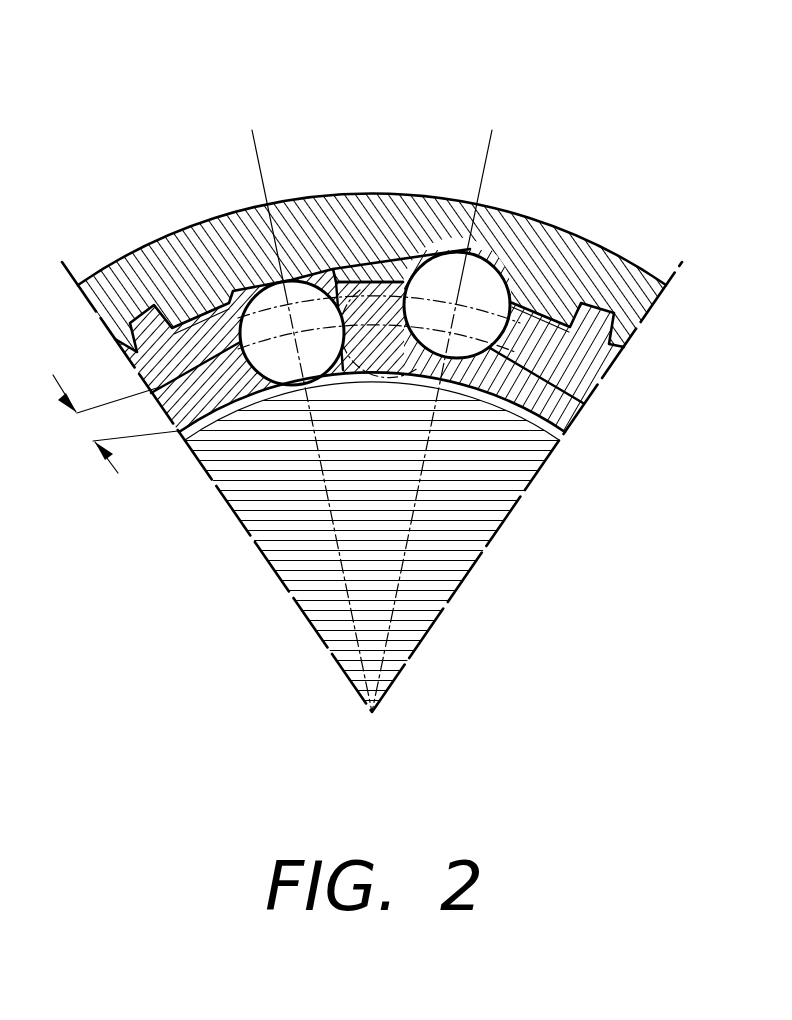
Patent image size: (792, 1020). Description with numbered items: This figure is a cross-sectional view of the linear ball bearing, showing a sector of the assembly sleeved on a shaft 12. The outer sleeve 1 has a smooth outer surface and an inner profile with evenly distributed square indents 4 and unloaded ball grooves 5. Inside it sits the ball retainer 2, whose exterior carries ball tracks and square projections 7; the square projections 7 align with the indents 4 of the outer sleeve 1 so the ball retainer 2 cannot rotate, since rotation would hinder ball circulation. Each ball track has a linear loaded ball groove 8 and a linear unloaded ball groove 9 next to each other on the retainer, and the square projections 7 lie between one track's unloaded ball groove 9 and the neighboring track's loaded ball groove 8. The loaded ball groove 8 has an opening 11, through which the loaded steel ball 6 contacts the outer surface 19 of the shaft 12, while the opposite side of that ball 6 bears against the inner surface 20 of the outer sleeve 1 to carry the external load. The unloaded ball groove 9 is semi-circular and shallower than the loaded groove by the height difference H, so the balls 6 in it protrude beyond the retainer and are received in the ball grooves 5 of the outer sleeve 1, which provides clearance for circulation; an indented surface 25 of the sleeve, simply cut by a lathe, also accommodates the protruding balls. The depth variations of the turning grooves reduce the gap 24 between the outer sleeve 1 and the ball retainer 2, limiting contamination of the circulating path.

The outer sleeve 1 is at (643, 310).
The ball retainer 2 is at (268, 146).
The square indents 4 is at (597, 300).
The unloaded ball grooves 5 is at (493, 248).
The steel balls 6 is at (503, 265).
The square projections 7 is at (620, 302).
The loaded ball groove 8 is at (242, 402).
The unloaded ball groove 9 is at (577, 405).
The opening 11 is at (330, 372).
The shaft 12 is at (470, 527).
The outer surface of the shaft 19 is at (303, 383).
The inner surface of outer sleeve 20 is at (262, 283).
The gap 24 is at (368, 266).
The indented surface 25 is at (393, 266).
The height difference H is at (115, 424).